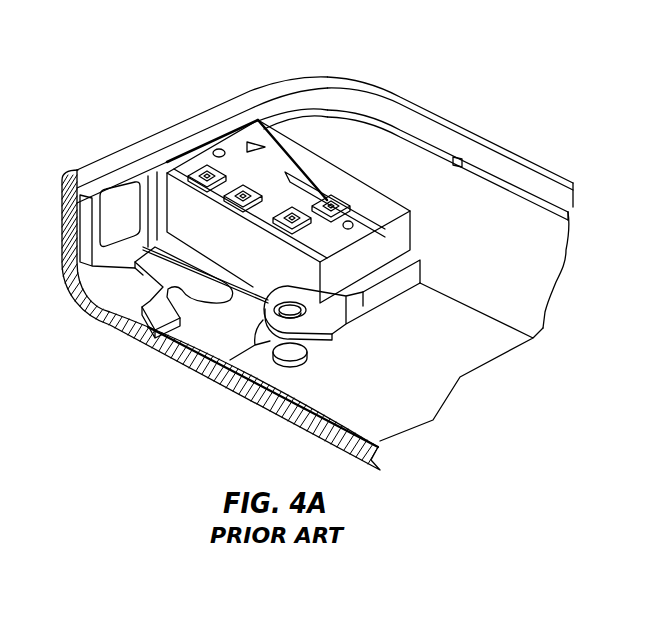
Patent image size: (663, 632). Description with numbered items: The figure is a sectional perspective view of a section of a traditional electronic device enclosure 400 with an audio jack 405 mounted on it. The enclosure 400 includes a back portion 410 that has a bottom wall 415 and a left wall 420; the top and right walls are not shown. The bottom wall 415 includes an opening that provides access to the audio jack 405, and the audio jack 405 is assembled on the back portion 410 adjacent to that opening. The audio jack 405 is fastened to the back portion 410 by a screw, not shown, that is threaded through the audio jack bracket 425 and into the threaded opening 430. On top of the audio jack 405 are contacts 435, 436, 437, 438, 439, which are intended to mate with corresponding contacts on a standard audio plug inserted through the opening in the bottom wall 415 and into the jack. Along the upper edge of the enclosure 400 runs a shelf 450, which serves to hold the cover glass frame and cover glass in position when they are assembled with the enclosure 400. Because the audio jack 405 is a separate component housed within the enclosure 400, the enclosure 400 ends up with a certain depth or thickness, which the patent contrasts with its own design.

The electronic device enclosure 400 is at (466, 53).
The audio jack 405 is at (203, 231).
The back portion 410 is at (423, 400).
The bottom wall 415 is at (130, 156).
The left wall 420 is at (520, 258).
The audio jack bracket 425 is at (207, 350).
The threaded opening 430 is at (280, 362).
The contact 435 is at (207, 163).
The contact 436 is at (243, 190).
The contact 437 is at (207, 170).
The contact 438 is at (292, 212).
The contact 439 is at (331, 200).
The shelf 450 is at (450, 152).